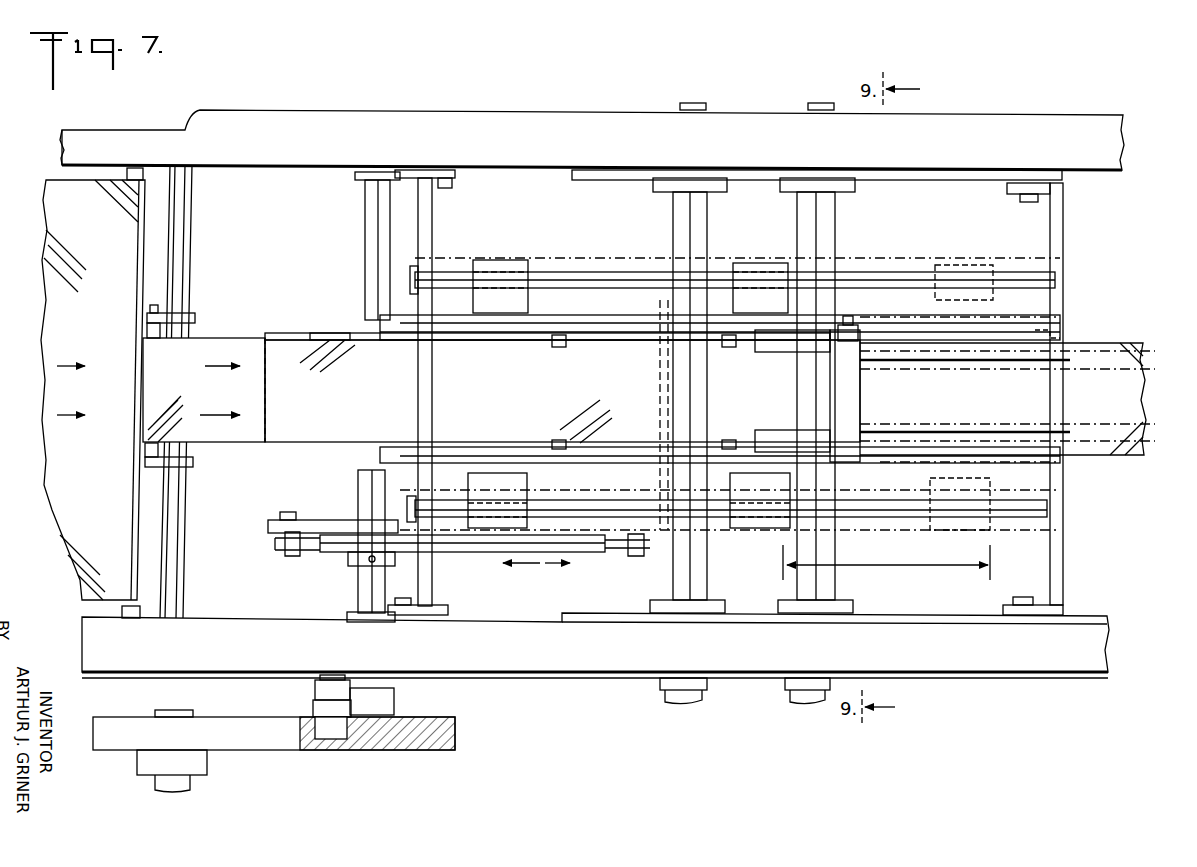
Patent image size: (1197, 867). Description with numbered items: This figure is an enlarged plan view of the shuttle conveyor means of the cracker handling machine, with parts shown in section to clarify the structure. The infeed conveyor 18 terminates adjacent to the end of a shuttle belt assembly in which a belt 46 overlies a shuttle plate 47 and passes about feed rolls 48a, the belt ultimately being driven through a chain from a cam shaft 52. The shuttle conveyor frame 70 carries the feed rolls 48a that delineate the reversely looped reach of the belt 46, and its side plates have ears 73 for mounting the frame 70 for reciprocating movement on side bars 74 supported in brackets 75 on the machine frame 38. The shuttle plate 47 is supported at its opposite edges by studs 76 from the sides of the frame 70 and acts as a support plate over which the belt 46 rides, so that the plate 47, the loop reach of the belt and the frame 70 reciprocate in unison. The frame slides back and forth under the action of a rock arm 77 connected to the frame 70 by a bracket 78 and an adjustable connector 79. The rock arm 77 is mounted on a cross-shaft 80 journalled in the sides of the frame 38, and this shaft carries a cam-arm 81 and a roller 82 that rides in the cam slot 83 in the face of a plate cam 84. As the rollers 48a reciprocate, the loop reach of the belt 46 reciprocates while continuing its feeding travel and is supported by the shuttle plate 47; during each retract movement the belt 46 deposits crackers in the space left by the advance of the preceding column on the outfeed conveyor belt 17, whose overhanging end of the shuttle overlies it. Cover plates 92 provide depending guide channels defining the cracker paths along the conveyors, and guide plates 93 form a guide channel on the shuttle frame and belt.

The outfeed conveyor belt 17 is at (1130, 400).
The conveyor 18 is at (120, 245).
The frame 38 is at (505, 120).
The belt 46 is at (228, 340).
The shuttle plate 47 is at (312, 314).
The feed rolls 48a is at (150, 334).
The cam shaft 52 is at (182, 790).
The shuttle conveyor frame 70 is at (612, 318).
The ears 73 is at (520, 247).
The side bars 74 is at (885, 275).
The brackets 75 is at (428, 232).
The studs 76 is at (560, 342).
The rock arm 77 is at (315, 523).
The bracket 78 is at (640, 484).
The adjustable connector 79 is at (590, 550).
The cross-shaft 80 is at (370, 583).
The cam-arm 81 is at (375, 700).
The roller 82 is at (332, 740).
The cam slot 83 is at (300, 724).
The plate cam 84 is at (455, 740).
The cover plates 92 is at (668, 365).
The guide plates 93 is at (938, 430).